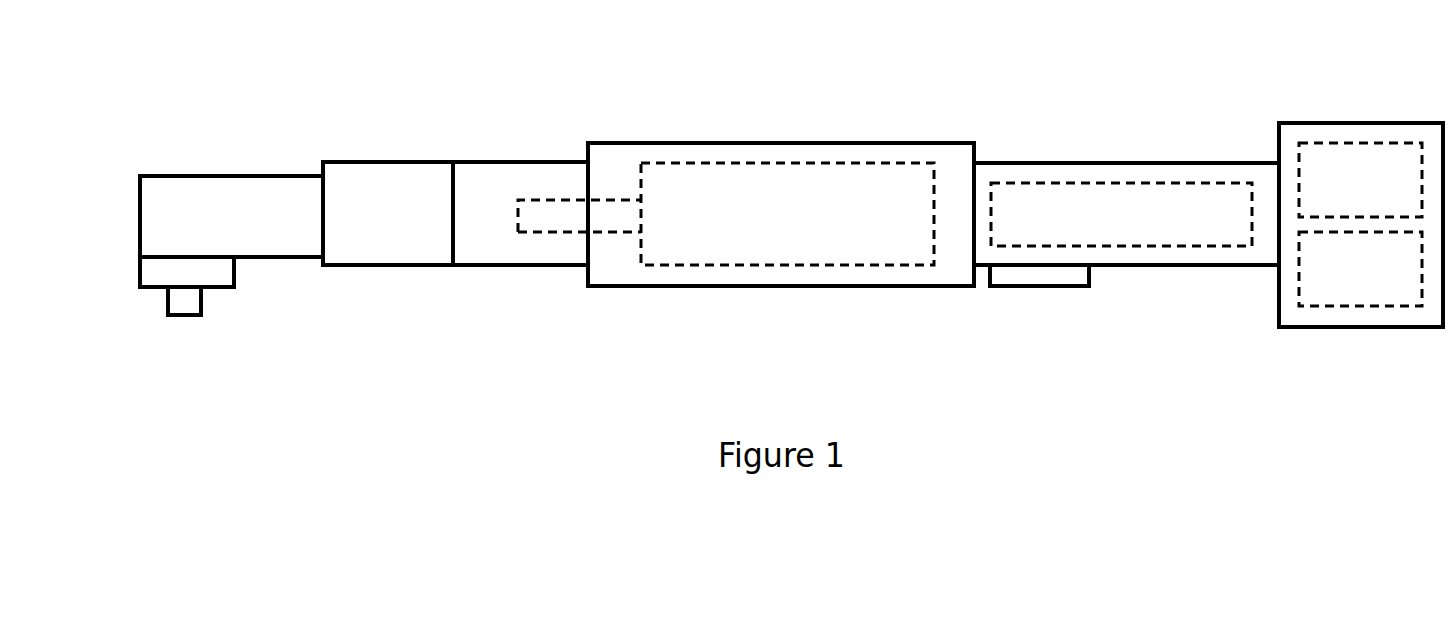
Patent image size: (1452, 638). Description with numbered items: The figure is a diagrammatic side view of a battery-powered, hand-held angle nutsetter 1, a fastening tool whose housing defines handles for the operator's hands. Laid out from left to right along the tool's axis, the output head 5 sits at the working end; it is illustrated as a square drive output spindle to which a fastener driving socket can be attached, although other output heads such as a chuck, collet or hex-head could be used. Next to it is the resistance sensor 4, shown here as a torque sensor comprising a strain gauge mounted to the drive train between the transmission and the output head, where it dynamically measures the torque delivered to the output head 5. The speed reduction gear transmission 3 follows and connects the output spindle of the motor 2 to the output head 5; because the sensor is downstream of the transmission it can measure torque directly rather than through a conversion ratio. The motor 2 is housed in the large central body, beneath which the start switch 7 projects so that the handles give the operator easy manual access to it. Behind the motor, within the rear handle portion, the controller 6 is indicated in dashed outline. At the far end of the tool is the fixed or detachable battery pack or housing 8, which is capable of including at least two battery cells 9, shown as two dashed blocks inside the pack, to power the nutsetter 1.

The angle nutsetter 1 is at (951, 138).
The motor 2 is at (789, 161).
The speed reduction gear transmission 3 is at (521, 160).
The resistance sensor 4 is at (401, 159).
The output head 5 is at (221, 172).
The controller 6 is at (1064, 181).
The start switch 7 is at (1021, 288).
The battery pack or housing 8 is at (1351, 120).
The battery cells 9 is at (1299, 202).